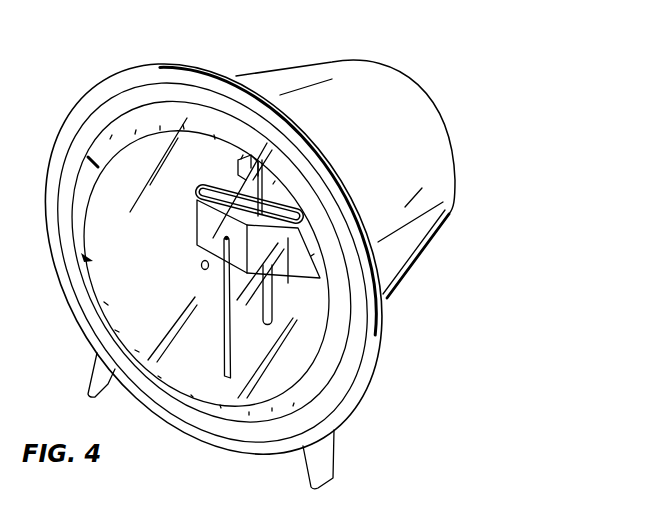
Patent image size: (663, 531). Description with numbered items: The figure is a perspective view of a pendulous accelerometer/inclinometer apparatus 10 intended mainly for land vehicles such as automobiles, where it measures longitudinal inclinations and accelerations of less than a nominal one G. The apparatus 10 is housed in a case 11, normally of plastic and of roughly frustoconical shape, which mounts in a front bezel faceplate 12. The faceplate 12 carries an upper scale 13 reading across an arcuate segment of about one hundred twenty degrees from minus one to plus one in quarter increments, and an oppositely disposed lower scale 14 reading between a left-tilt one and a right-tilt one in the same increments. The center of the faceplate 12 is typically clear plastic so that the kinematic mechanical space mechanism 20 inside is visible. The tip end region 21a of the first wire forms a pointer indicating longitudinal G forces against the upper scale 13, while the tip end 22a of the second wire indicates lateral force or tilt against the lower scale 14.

The pendulous accelerometer/inclinometer apparatus 10 is at (271, 62).
The case 11 is at (338, 70).
The front bezel faceplate 12 is at (338, 350).
The upper scale 13 is at (340, 306).
The lower scale 14 is at (312, 391).
The kinematic mechanical space mechanism 20 is at (158, 226).
The tip end region of first wire 21a is at (215, 185).
The tip end of second wire 22a is at (227, 353).